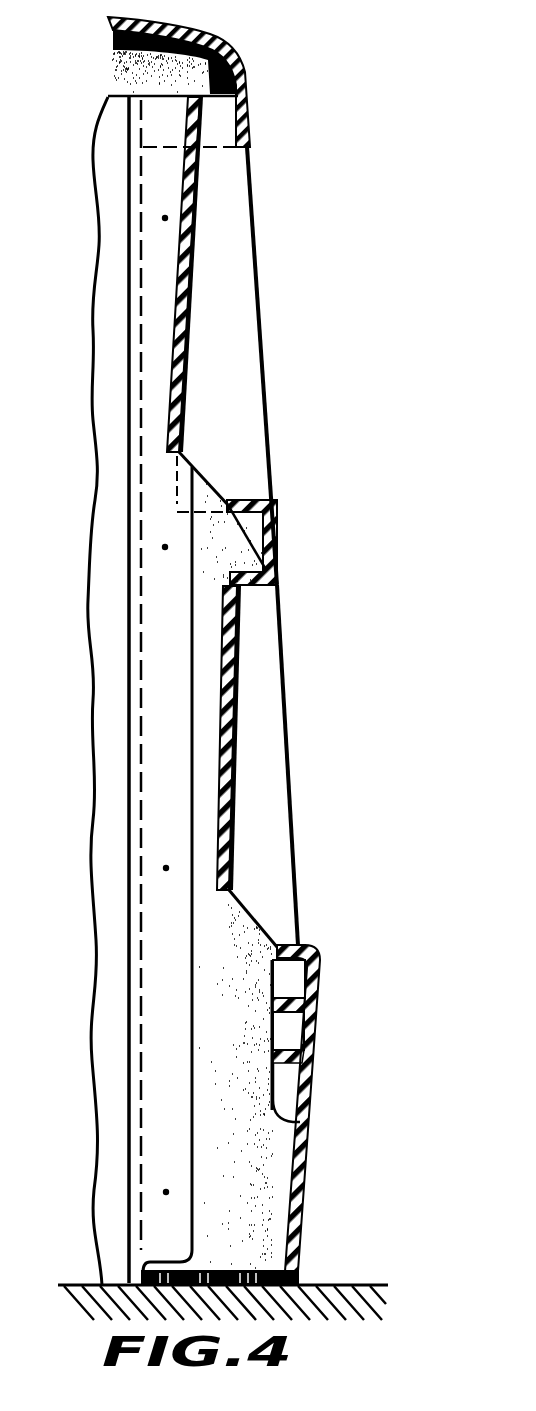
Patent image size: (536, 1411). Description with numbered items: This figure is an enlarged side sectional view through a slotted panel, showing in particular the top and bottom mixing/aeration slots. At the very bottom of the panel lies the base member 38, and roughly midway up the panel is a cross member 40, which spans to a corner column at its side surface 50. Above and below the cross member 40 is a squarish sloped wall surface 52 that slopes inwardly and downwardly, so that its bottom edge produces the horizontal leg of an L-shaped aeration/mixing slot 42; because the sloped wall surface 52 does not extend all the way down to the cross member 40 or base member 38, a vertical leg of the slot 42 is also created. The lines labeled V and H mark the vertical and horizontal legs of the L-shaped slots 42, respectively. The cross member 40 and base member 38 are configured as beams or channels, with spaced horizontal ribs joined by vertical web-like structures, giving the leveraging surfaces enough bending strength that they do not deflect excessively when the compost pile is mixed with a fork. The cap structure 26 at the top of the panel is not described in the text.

The cap 26 is at (250, 70).
The base member 38 is at (307, 1115).
The cross member 40 is at (270, 545).
The L-shaped aeration/mixing slot 42 is at (213, 481).
The side surface 50 is at (236, 328).
The sloped wall surface 52 is at (203, 188).
The vertical leg line V is at (177, 484).
The horizontal leg line H is at (180, 512).